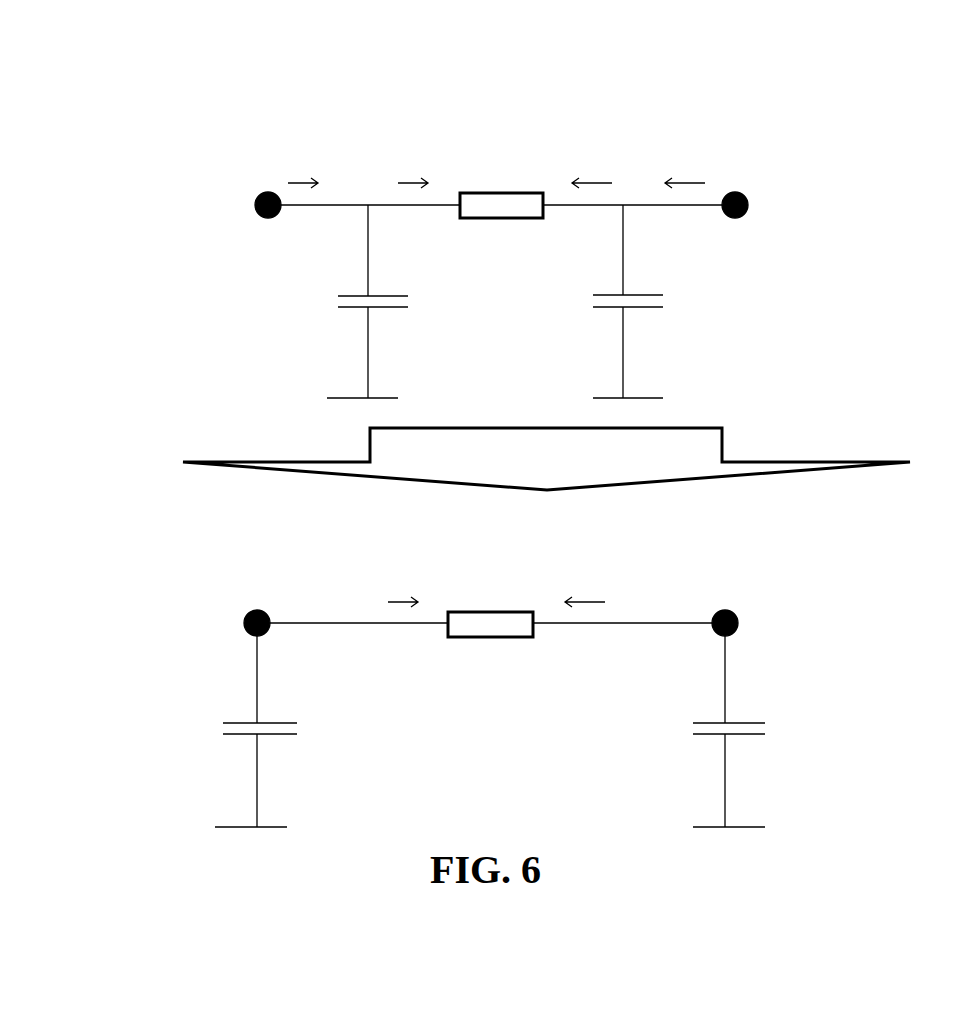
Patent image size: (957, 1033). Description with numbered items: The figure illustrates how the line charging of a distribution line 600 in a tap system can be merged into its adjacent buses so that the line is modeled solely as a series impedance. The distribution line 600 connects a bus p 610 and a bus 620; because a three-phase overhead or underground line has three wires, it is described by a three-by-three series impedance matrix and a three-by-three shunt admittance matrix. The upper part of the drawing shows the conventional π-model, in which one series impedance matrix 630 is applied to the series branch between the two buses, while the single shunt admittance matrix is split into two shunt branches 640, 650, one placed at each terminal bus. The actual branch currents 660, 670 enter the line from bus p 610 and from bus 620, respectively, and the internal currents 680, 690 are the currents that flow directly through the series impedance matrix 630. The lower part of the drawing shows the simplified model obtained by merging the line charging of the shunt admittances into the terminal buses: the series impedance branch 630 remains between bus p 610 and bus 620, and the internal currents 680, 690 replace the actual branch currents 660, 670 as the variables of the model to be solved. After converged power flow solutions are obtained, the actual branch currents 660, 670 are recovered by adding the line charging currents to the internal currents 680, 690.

The distribution line 600 is at (648, 52).
The bus p 610 is at (258, 217).
The bus 620 is at (746, 212).
The series impedance matrix 630 is at (503, 120).
The shunt branch 640 is at (573, 357).
The shunt branch 650 is at (325, 325).
The actual branch current 660 is at (300, 125).
The actual branch current 670 is at (680, 135).
The internal current 680 is at (415, 125).
The internal current 690 is at (597, 143).